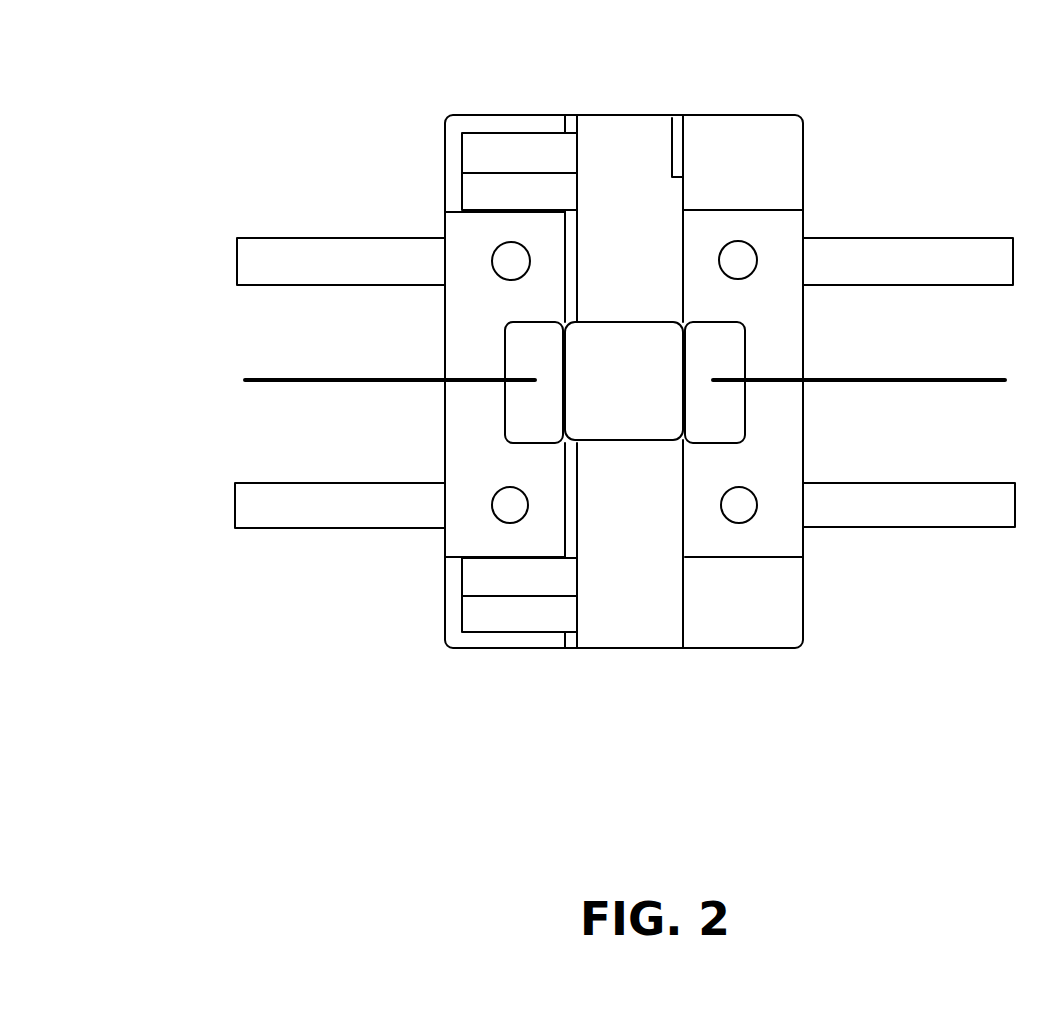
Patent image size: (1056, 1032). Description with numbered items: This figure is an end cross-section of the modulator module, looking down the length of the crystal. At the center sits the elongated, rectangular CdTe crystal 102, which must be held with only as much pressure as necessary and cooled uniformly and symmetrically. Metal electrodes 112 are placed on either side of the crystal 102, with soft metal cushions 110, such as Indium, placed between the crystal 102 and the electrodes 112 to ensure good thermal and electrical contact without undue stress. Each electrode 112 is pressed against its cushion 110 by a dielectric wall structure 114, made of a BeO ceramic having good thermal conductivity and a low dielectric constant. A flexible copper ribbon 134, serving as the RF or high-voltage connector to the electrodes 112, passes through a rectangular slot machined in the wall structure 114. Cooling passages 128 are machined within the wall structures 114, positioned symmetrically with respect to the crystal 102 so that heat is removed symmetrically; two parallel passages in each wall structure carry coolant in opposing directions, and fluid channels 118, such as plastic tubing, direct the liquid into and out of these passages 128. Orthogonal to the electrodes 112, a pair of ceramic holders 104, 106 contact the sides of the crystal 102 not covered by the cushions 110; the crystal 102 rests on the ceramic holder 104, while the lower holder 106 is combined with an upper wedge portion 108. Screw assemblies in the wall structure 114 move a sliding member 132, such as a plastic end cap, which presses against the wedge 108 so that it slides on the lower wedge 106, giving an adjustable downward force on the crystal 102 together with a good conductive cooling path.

The CdTe crystal 102 is at (663, 398).
The ceramic holder 104 is at (604, 625).
The lower holder 106 is at (665, 207).
The upper wedge portion 108 is at (645, 140).
The soft metal cushion 110 is at (683, 443).
The metal electrode 112 is at (728, 355).
The dielectric wall structure 114 is at (445, 315).
The fluid channel 118 is at (372, 238).
The cooling passage 128 is at (750, 245).
The sliding member 132 is at (541, 142).
The flexible copper ribbon 134 is at (288, 382).